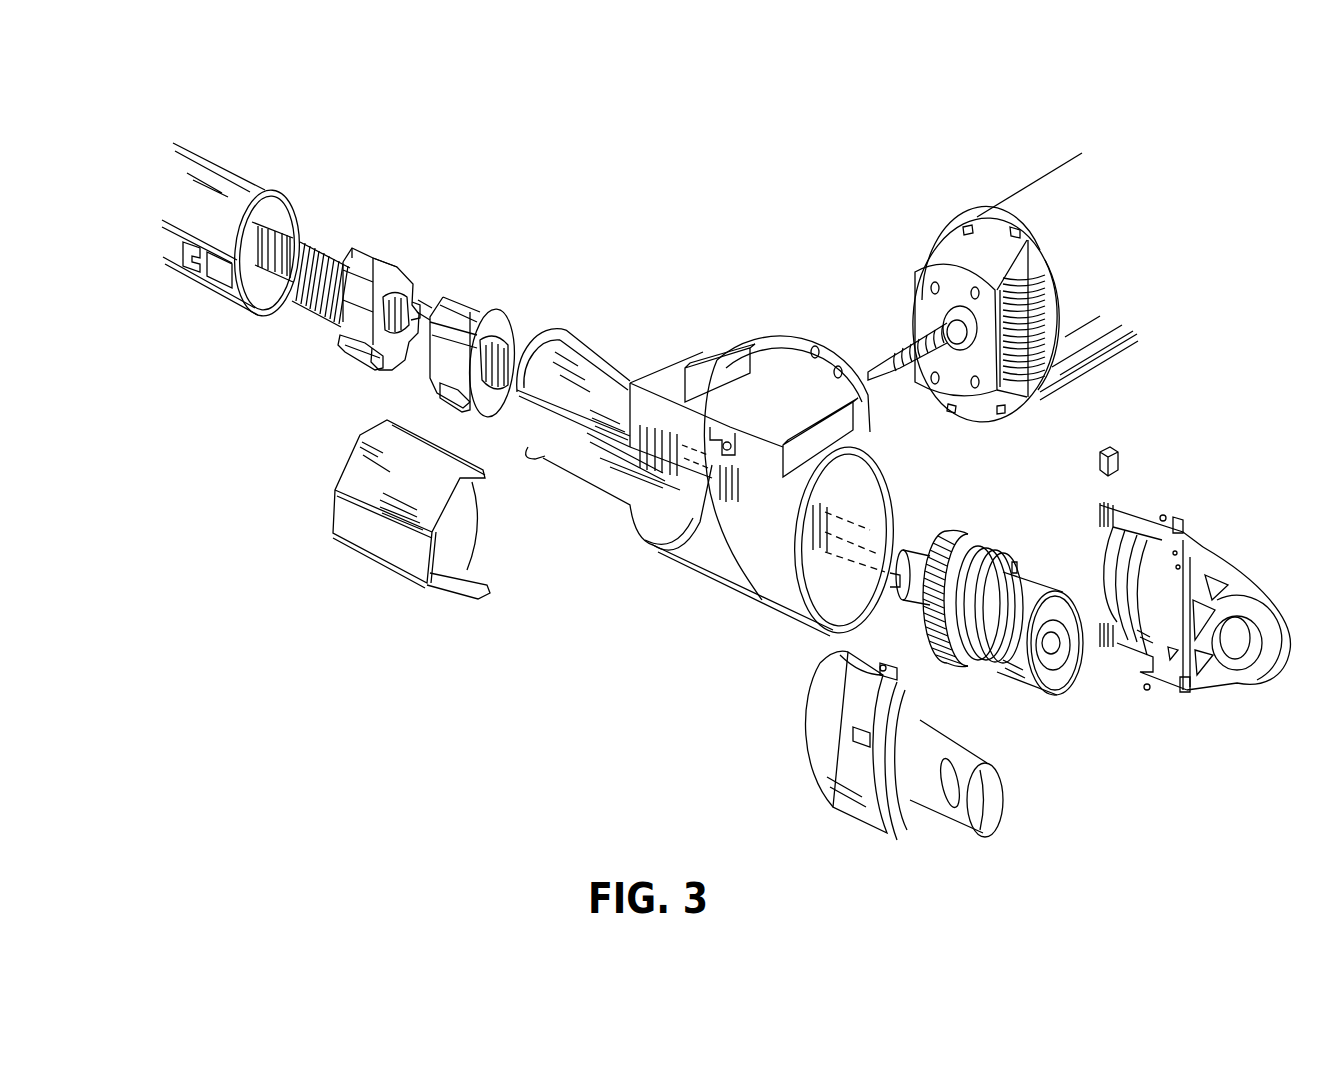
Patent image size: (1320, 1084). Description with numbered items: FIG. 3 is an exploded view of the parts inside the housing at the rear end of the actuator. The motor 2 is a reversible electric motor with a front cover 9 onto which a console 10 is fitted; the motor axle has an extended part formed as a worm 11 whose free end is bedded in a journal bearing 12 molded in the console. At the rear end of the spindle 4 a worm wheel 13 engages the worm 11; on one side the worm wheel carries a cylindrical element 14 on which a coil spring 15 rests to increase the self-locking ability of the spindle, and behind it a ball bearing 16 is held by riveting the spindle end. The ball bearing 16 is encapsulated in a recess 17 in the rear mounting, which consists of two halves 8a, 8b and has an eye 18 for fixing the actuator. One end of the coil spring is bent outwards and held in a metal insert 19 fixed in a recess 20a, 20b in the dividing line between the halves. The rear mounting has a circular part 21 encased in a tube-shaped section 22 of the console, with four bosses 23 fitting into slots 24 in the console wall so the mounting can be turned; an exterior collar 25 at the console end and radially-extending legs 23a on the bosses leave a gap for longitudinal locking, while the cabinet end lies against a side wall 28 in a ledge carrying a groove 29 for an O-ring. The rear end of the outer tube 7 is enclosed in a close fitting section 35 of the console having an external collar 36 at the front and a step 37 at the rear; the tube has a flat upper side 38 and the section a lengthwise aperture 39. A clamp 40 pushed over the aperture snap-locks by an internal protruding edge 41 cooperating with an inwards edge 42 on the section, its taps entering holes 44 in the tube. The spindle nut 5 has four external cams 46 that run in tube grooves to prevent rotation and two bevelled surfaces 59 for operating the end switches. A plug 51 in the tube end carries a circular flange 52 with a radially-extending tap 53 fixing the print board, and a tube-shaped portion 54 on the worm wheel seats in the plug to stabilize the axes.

The motor 2 is at (1063, 350).
The spindle 4 is at (420, 308).
The spindle nut 5 is at (413, 280).
The outer tube 7 is at (240, 172).
The rear mounting half 8a is at (1137, 513).
The rear mounting half 8b is at (822, 750).
The front cover 9 is at (967, 260).
The console 10 is at (710, 363).
The worm 11 is at (900, 353).
The journal bearing 12 is at (722, 447).
The worm wheel 13 is at (970, 550).
The cylindrical element 14 is at (987, 557).
The coil spring 15 is at (987, 653).
The ball bearing 16 is at (1027, 690).
The recess 17 is at (1127, 653).
The eye 18 is at (1243, 640).
The metal insert 19 is at (1120, 465).
The recess 20a is at (1100, 507).
The recess 20b is at (848, 653).
The circular part 21 is at (827, 707).
The tube-shaped section 22 is at (852, 487).
The bosses 23 is at (1180, 528).
The radially-extending legs 23a is at (1167, 517).
The slots 24 is at (777, 440).
The exterior collar 25 is at (870, 463).
The side wall 28 is at (1200, 547).
The groove 29 is at (1187, 690).
The enclosing section 35 is at (600, 460).
The external collar 36 is at (527, 373).
The step 37 is at (650, 370).
The flat upper side 38 is at (222, 273).
The lengthwise aperture 39 is at (535, 425).
The clamp 40 is at (342, 507).
The internal protruding edge 41 is at (468, 568).
The inwards edge 42 is at (580, 347).
The holes 44 is at (183, 252).
The external cams 46 is at (373, 250).
The plug 51 is at (430, 368).
The circular flange 52 is at (483, 312).
The radially-extending tap 53 is at (444, 400).
The tube-shaped portion 54 is at (917, 550).
The bevelled surfaces 59 is at (340, 335).